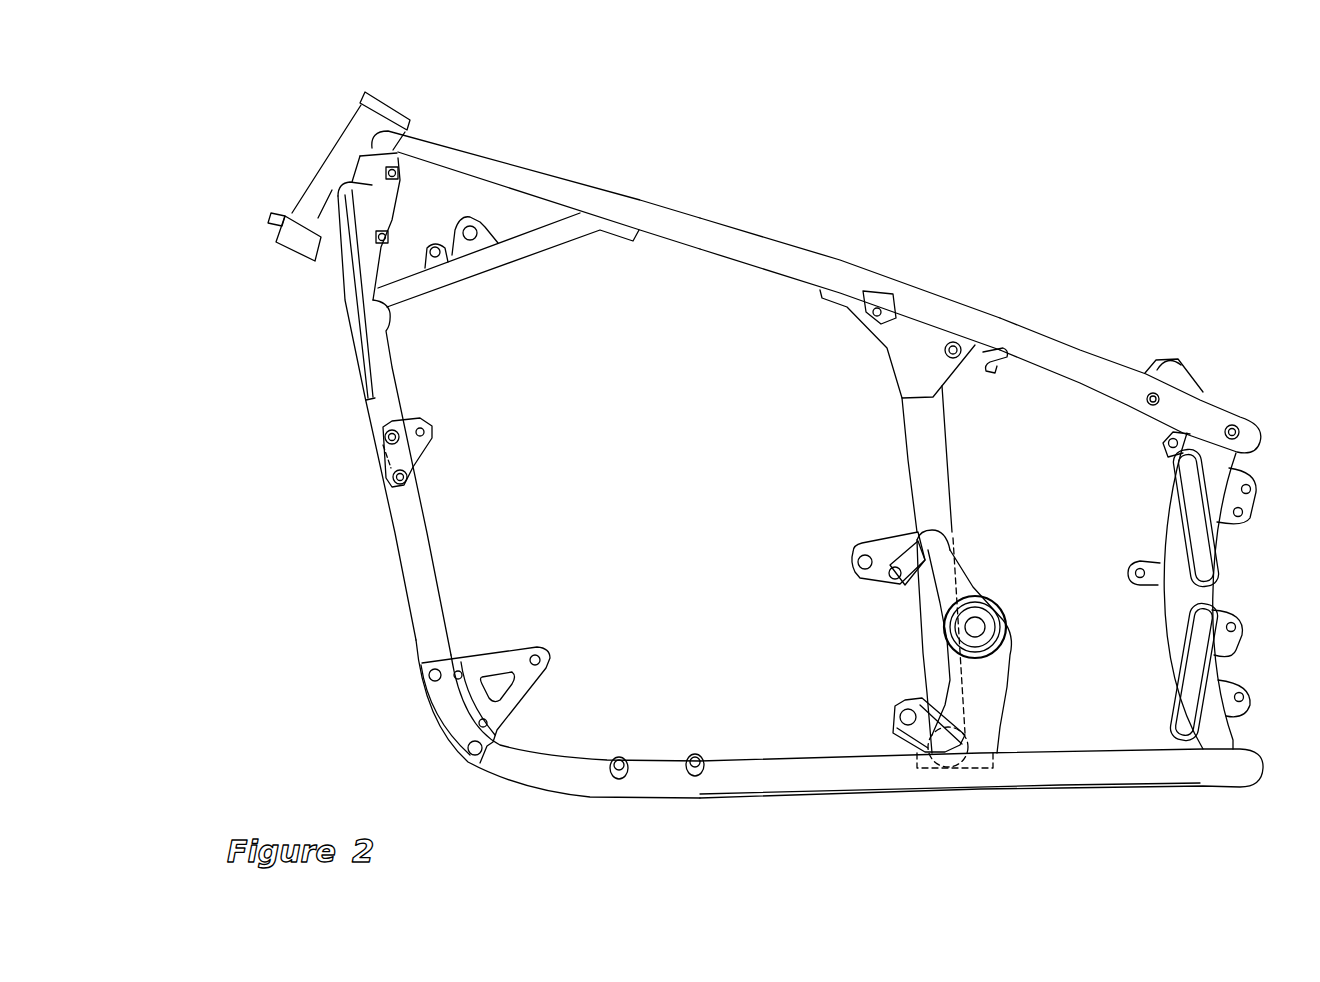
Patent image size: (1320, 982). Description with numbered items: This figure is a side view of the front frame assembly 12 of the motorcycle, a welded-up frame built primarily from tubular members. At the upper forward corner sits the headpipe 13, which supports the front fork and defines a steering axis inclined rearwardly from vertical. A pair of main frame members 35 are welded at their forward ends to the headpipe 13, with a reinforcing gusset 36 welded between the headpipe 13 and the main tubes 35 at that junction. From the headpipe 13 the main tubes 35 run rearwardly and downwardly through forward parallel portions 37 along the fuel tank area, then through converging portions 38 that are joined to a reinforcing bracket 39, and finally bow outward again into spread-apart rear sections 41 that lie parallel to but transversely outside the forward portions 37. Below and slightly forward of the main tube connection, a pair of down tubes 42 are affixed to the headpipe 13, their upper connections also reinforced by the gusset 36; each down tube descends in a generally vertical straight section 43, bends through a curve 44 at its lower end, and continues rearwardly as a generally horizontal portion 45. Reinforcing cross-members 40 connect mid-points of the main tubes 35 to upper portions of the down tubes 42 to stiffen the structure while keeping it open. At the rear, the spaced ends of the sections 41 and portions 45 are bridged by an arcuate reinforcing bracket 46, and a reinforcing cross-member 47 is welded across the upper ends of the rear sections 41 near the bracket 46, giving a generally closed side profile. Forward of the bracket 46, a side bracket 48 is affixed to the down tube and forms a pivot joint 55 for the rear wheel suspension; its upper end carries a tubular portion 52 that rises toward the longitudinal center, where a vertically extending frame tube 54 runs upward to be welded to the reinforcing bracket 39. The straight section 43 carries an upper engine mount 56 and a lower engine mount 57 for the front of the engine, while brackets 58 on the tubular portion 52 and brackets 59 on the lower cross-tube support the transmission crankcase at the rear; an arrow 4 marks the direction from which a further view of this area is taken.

The section view arrow 4 is at (1048, 558).
The front frame assembly 12 is at (1035, 278).
The headpipe 13 is at (343, 150).
The main frame members 35 is at (782, 251).
The reinforcing gusset 36 is at (392, 203).
The forward parallel portions 37 is at (542, 177).
The converging portions 38 is at (860, 277).
The reinforcing bracket 39 is at (898, 348).
The reinforcing cross-members 40 is at (503, 257).
The rear sections 41 is at (1091, 365).
The down tubes 42 is at (340, 658).
The straight sections 43 is at (399, 505).
The curve 44 is at (522, 772).
The horizontal portions 45 is at (808, 777).
The arcuate bridging reinforcing brackets 46 is at (1207, 593).
The reinforcing cross-member 47 is at (1180, 386).
The side bracket 48 is at (987, 698).
The tubular portion 52 is at (933, 540).
The vertically extending frame tube 54 is at (940, 497).
The pivot joint 55 is at (988, 627).
The upper engine mount 56 is at (432, 432).
The lower engine mount 57 is at (516, 662).
The brackets 58 is at (853, 562).
The brackets 59 is at (897, 717).